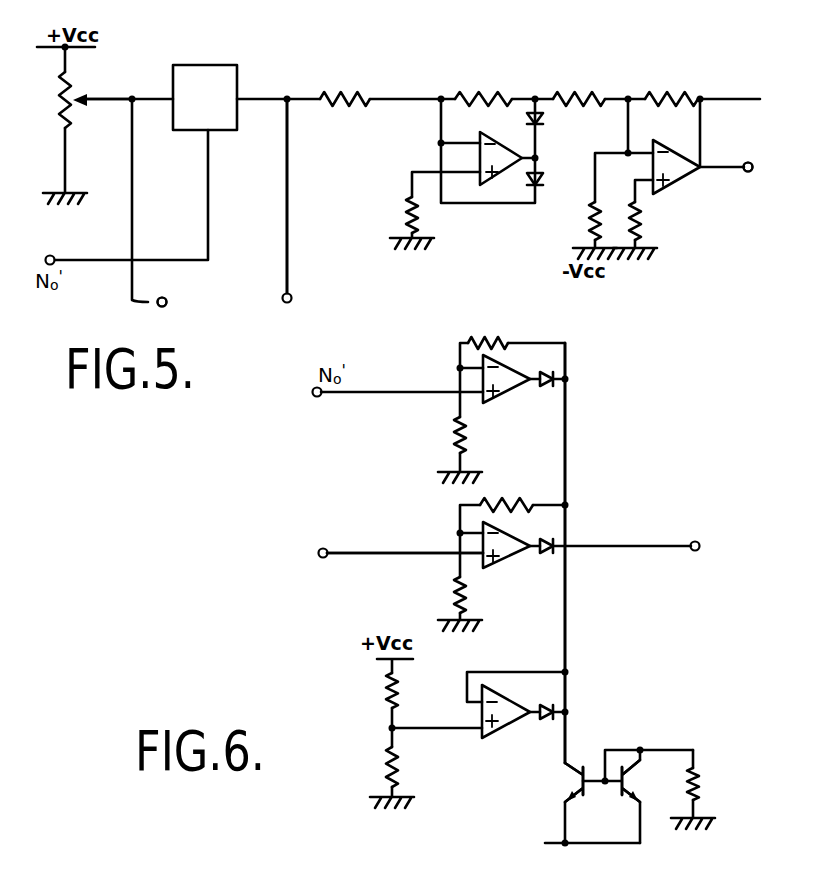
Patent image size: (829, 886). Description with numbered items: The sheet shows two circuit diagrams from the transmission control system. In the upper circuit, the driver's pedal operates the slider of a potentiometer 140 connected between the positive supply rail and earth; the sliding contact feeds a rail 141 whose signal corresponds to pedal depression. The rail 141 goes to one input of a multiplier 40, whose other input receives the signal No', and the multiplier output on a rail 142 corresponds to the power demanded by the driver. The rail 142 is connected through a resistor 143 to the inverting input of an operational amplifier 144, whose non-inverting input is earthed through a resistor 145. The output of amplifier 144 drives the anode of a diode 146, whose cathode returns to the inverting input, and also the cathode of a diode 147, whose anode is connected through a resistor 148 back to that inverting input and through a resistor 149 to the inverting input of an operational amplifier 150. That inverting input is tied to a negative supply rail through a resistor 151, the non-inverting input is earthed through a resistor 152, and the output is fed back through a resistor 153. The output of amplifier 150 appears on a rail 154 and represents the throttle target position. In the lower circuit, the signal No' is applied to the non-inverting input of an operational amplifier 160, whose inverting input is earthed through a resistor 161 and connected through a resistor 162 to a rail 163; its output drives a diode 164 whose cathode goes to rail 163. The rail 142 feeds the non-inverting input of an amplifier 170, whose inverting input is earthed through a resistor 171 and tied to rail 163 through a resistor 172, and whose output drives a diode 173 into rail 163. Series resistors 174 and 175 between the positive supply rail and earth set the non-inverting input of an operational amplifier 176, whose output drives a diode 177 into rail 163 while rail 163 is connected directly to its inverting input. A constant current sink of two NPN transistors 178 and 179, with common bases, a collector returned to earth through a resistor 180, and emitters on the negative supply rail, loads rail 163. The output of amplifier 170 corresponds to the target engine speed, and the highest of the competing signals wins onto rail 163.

In FIG. 5, the multiplier 40 is at (200, 85).
In FIG. 5, the potentiometer 140 is at (70, 100).
In FIG. 5, the rail 141 is at (140, 302).
In FIG. 5, the rail 142 is at (290, 243).
In FIG. 6, the rail 142 is at (373, 556).
In FIG. 5, the resistor 143 is at (347, 90).
In FIG. 5, the operational amplifier 144 is at (510, 142).
In FIG. 5, the resistor 145 is at (410, 212).
In FIG. 5, the diode 146 is at (544, 182).
In FIG. 5, the diode 147 is at (543, 116).
In FIG. 5, the resistor 148 is at (488, 90).
In FIG. 5, the resistor 149 is at (587, 90).
In FIG. 5, the operational amplifier 150 is at (673, 173).
In FIG. 5, the resistor 151 is at (588, 222).
In FIG. 5, the resistor 152 is at (641, 225).
In FIG. 5, the resistor 153 is at (669, 90).
In FIG. 5, the rail 154 is at (727, 166).
In FIG. 6, the operational amplifier 160 is at (503, 390).
In FIG. 6, the resistor 161 is at (456, 438).
In FIG. 6, the resistor 162 is at (488, 340).
In FIG. 6, the rail 163 is at (567, 432).
In FIG. 6, the diode 164 is at (545, 395).
In FIG. 6, the amplifier 170 is at (503, 560).
In FIG. 6, the resistor 171 is at (456, 597).
In FIG. 6, the resistor 172 is at (515, 500).
In FIG. 6, the diode 173 is at (542, 557).
In FIG. 6, the resistor 174 is at (386, 694).
In FIG. 6, the resistor 175 is at (386, 768).
In FIG. 6, the operational amplifier 176 is at (510, 722).
In FIG. 6, the diode 177 is at (542, 723).
In FIG. 6, the NPN transistor 178 is at (572, 787).
In FIG. 6, the NPN transistor 179 is at (630, 779).
In FIG. 6, the resistor 180 is at (700, 793).